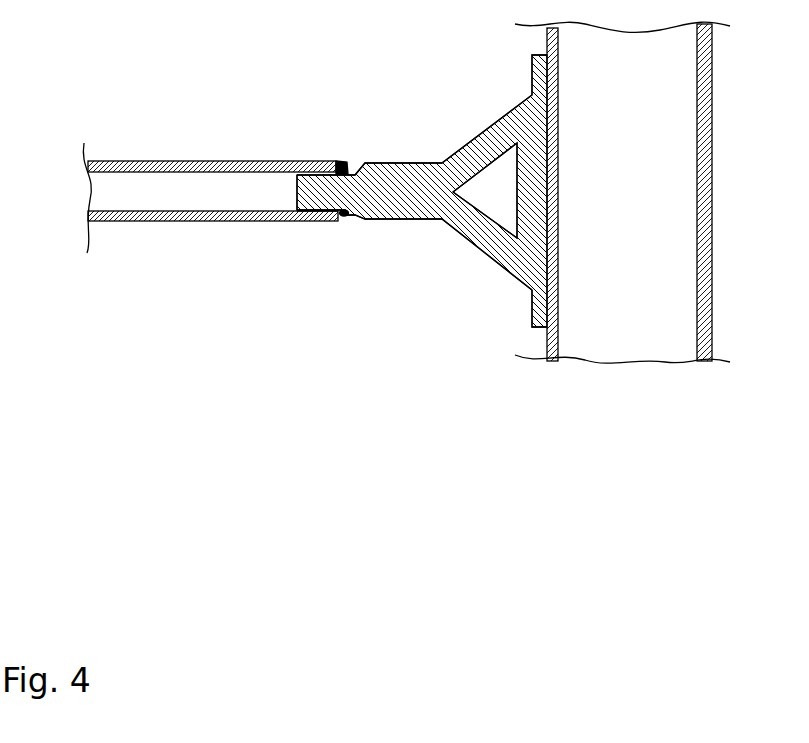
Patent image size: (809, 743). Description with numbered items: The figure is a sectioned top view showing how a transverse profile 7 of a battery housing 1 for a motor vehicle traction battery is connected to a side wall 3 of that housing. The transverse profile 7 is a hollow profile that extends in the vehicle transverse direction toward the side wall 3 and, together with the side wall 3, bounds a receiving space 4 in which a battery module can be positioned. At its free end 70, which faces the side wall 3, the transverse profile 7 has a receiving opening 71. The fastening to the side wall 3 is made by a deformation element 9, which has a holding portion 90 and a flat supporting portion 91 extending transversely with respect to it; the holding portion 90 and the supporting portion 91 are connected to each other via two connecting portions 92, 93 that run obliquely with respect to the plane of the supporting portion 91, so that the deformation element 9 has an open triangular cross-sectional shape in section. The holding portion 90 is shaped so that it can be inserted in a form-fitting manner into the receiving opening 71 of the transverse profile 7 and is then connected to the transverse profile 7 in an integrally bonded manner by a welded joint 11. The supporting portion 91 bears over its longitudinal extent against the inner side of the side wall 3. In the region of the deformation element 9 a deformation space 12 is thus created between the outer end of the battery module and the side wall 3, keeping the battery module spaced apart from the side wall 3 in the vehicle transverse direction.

The battery housing 1 is at (210, 358).
The side wall 3 is at (704, 198).
The receiving space 4 is at (210, 310).
The transverse profile 7 is at (158, 215).
The deformation element 9 is at (496, 92).
The welded joint 11 is at (343, 213).
The deformation space 12 is at (446, 317).
The free end 70 is at (326, 167).
The receiving opening 71 is at (305, 209).
The holding portion 90 is at (315, 192).
The supporting portion 91 is at (540, 310).
The connecting portion 92 is at (492, 247).
The connecting portion 93 is at (483, 148).